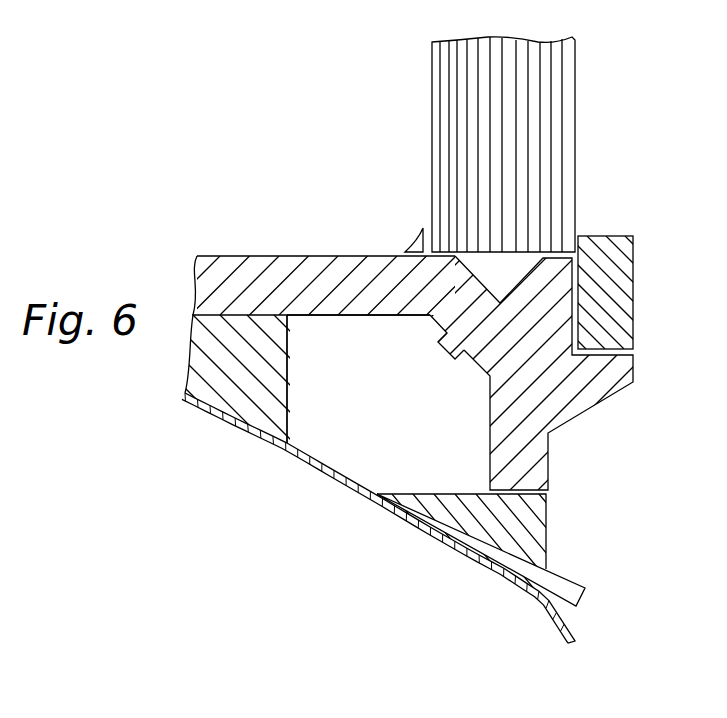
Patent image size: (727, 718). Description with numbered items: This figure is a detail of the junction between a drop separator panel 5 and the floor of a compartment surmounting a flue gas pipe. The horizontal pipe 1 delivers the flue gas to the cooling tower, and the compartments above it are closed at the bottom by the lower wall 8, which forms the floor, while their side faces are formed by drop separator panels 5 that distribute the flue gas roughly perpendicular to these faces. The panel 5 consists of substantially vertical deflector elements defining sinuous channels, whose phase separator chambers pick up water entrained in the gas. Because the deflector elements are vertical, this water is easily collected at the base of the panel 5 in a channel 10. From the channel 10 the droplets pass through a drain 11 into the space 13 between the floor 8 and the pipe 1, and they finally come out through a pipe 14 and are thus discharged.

The horizontal pipe 1 is at (332, 476).
The drop separator panel 5 is at (547, 123).
The lower wall 8 is at (306, 273).
The channel 10 is at (518, 260).
The drain 11 is at (451, 344).
The space 13 is at (372, 411).
The pipe 14 is at (547, 547).